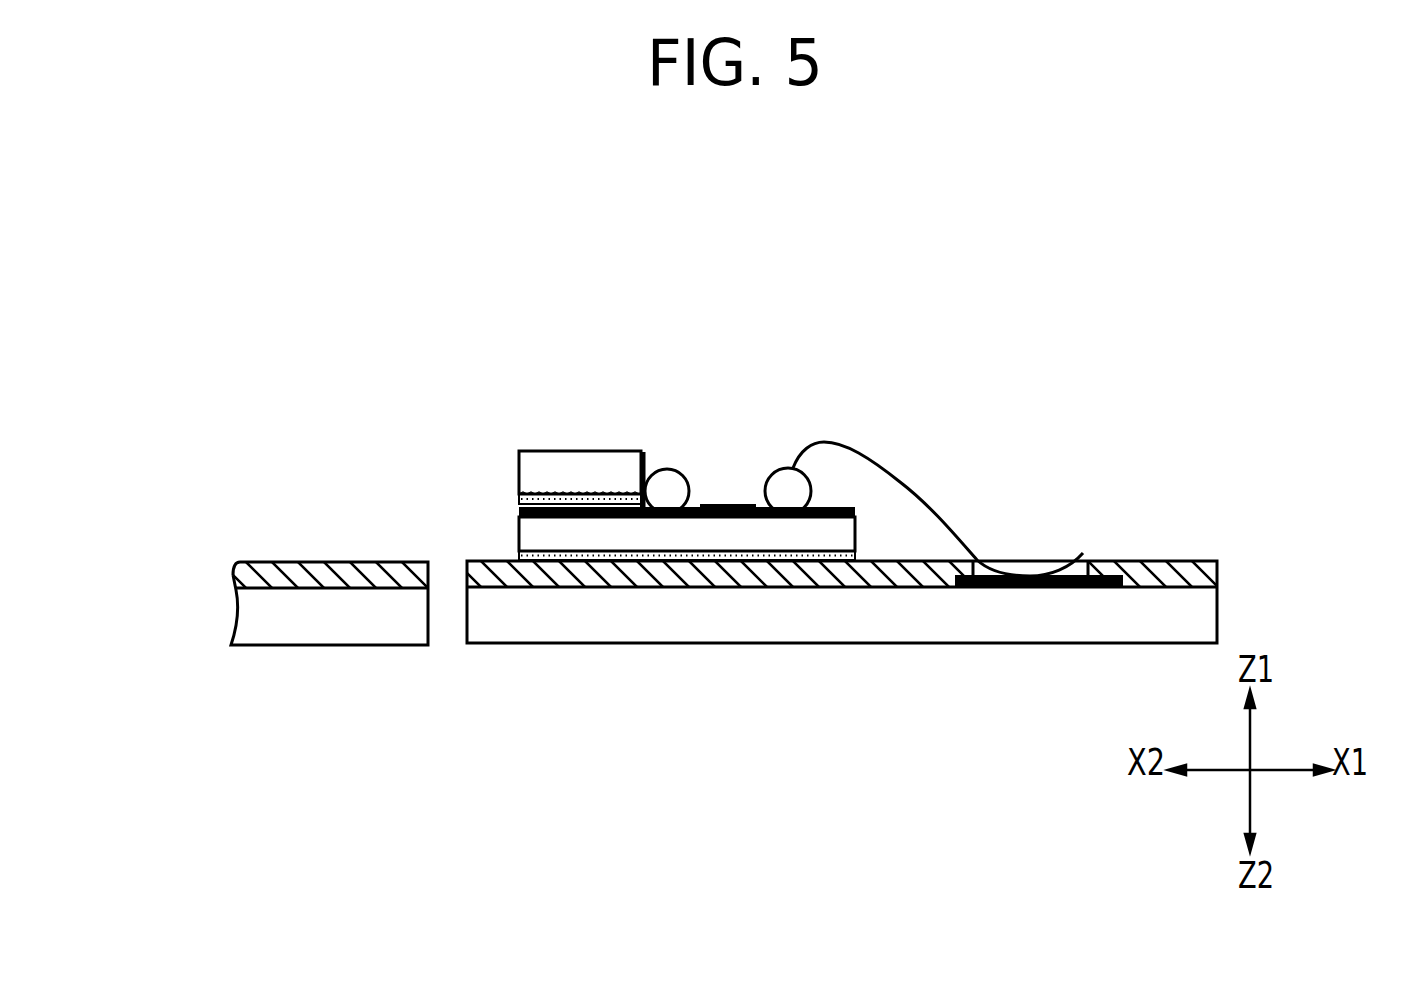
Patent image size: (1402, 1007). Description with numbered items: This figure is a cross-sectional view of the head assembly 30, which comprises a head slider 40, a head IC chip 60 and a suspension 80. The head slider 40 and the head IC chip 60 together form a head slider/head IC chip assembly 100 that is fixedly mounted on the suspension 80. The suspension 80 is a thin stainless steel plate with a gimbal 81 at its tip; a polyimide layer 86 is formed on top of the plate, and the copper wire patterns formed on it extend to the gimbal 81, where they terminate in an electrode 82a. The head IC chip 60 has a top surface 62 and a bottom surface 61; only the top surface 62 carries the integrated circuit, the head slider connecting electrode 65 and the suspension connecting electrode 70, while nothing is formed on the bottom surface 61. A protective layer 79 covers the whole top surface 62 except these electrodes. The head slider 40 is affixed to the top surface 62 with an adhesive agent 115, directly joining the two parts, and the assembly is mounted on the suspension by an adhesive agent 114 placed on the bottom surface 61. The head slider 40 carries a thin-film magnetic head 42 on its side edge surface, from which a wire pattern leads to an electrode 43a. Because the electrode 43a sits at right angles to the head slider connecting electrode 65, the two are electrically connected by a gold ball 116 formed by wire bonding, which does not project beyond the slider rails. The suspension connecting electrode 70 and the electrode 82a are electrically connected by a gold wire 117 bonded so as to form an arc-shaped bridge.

The head assembly 30 is at (758, 490).
The head slider 40 is at (510, 467).
The magnetic head 42 is at (645, 458).
The electrode 43a is at (650, 468).
The head IC chip 60 is at (510, 522).
The bottom surface 61 is at (552, 557).
The top surface 62 is at (587, 497).
The head slider connecting electrode 65 is at (670, 518).
The suspension connecting electrode 70 is at (800, 518).
The protective layer 79 is at (730, 507).
The suspension 80 is at (333, 645).
The gimbal 81 is at (738, 622).
The electrode 82a is at (1020, 590).
The polyimide layer 86 is at (286, 572).
The head slider/head IC chip assembly 100 is at (576, 419).
The adhesive agent 114 is at (613, 555).
The adhesive agent 115 is at (540, 497).
The gold ball 116 is at (685, 507).
The gold wire 117 is at (912, 488).